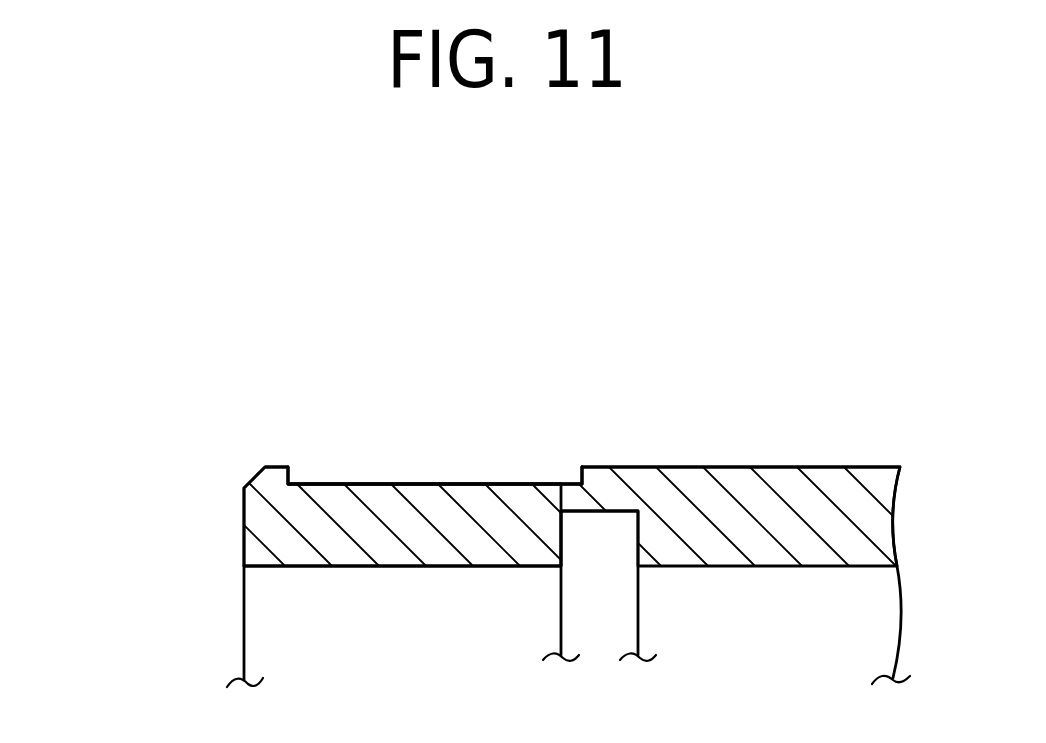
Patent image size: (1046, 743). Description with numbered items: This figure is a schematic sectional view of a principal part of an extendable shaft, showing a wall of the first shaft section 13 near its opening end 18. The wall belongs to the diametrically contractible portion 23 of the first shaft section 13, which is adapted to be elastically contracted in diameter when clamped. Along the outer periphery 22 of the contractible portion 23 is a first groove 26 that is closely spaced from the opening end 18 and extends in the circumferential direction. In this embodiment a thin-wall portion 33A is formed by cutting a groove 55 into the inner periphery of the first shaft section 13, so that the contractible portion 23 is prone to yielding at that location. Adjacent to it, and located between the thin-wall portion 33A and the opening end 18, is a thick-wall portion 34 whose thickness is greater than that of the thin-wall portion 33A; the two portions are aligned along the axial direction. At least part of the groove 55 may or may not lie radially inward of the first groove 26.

The first shaft section 13 is at (845, 466).
The opening end 18 is at (244, 603).
The outer periphery 22 is at (767, 466).
The diametrically contractible portion 23 is at (512, 440).
The first groove 26 is at (422, 483).
The thin-wall portion 33A is at (598, 487).
The thick-wall portion 34 is at (345, 510).
The groove 55 is at (640, 553).